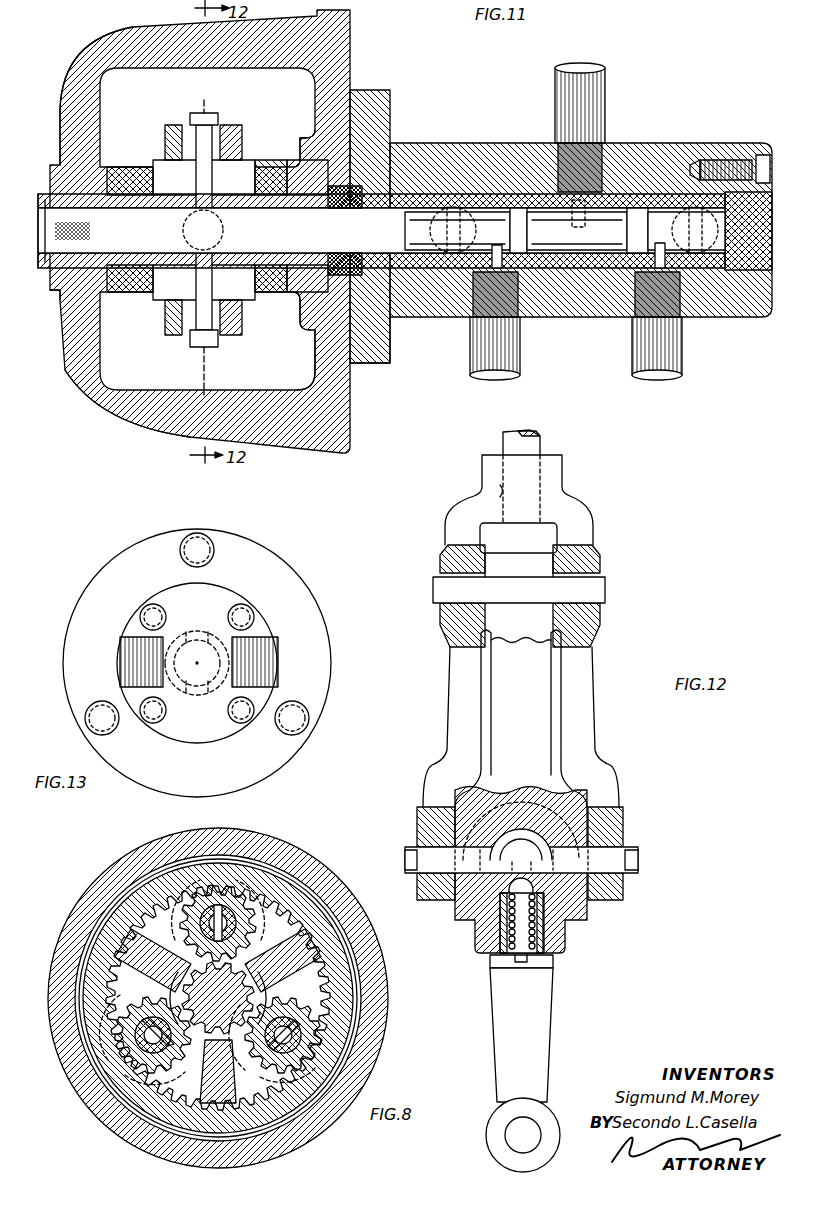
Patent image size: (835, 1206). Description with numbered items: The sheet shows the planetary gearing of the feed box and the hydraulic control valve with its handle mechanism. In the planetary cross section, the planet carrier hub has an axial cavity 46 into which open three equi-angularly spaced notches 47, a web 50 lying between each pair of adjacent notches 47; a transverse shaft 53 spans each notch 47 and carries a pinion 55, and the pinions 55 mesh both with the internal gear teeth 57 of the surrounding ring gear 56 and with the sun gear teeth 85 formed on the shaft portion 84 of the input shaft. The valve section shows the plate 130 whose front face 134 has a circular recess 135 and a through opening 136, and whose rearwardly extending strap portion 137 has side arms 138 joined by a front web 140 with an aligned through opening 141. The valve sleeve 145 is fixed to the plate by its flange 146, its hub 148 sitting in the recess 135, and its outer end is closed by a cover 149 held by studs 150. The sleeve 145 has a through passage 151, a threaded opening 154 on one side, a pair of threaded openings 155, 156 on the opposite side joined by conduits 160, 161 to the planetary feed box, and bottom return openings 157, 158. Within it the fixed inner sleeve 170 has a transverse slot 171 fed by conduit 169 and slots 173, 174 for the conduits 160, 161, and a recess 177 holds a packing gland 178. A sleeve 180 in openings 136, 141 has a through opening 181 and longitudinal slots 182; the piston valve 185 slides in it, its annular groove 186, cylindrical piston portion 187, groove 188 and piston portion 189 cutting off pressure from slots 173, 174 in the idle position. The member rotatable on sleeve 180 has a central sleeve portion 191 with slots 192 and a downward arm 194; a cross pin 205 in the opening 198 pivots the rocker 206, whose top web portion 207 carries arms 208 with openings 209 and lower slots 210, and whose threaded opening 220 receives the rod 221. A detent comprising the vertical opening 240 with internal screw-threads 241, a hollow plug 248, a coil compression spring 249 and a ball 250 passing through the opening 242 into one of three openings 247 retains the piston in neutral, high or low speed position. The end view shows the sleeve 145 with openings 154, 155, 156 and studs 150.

In FIG. 11, the side arms 138 is at (178, 42).
In FIG. 11, the front web 140 is at (75, 112).
In FIG. 11, the strap portion 137 is at (125, 432).
In FIG. 11, the through opening 141 is at (56, 295).
In FIG. 11, the front face 134 is at (352, 48).
In FIG. 11, the plate 130 is at (378, 400).
In FIG. 11, the flange 146 is at (395, 92).
In FIG. 13, the flange 146 is at (248, 553).
In FIG. 11, the valve sleeve 145 is at (480, 127).
In FIG. 11, the cover 149 is at (772, 305).
In FIG. 11, the through opening 136 is at (296, 300).
In FIG. 11, the hub 148 is at (310, 335).
In FIG. 11, the circular recess 135 is at (322, 140).
In FIG. 11, the longitudinal slots 182 is at (228, 204).
In FIG. 11, the sleeve 180 is at (128, 170).
In FIG. 11, the central sleeve portion 191 is at (268, 165).
In FIG. 12, the central sleeve portion 191 is at (580, 912).
In FIG. 11, the piston valve 185 is at (168, 205).
In FIG. 11, the longitudinal slots 192 is at (170, 170).
In FIG. 11, the arms 208 is at (235, 138).
In FIG. 12, the arms 208 is at (578, 658).
In FIG. 11, the slots 210 is at (215, 125).
In FIG. 12, the slots 210 is at (612, 842).
In FIG. 11, the annular groove 186 is at (575, 280).
In FIG. 11, the through opening 242 is at (182, 230).
In FIG. 12, the through opening 242 is at (470, 928).
In FIG. 11, the through opening 181 is at (262, 215).
In FIG. 11, the packing gland 178 is at (335, 252).
In FIG. 11, the transverse slot 173 is at (496, 250).
In FIG. 11, the cylindrical piston portion 189 is at (520, 232).
In FIG. 11, the transverse slot 171 is at (576, 198).
In FIG. 11, the transverse slot 174 is at (660, 243).
In FIG. 11, the conduit 169 is at (575, 68).
In FIG. 11, the internally screw-threaded opening 154 is at (590, 165).
In FIG. 13, the internally screw-threaded opening 154 is at (280, 645).
In FIG. 11, the cylindrical piston portion 187 is at (637, 192).
In FIG. 11, the inner sleeve 170 is at (660, 192).
In FIG. 11, the return opening 158 is at (690, 140).
In FIG. 11, the studs 150 is at (765, 155).
In FIG. 13, the studs 150 is at (245, 615).
In FIG. 11, the recess 177 is at (400, 143).
In FIG. 11, the return opening 157 is at (420, 140).
In FIG. 11, the cylindrical groove 188 is at (477, 192).
In FIG. 11, the through passage 151 is at (495, 192).
In FIG. 11, the conduit 160 is at (470, 350).
In FIG. 11, the internally screw-threaded opening 155 is at (512, 310).
In FIG. 13, the internally screw-threaded opening 155 is at (82, 568).
In FIG. 11, the conduit 161 is at (688, 370).
In FIG. 11, the internally screw-threaded opening 156 is at (675, 310).
In FIG. 13, the internally screw-threaded opening 156 is at (120, 635).
In FIG. 12, the rod 221 is at (541, 443).
In FIG. 12, the vertical threaded through opening 220 is at (500, 487).
In FIG. 12, the top web portion 207 is at (575, 487).
In FIG. 12, the transverse through opening 198 is at (515, 575).
In FIG. 12, the through openings 209 is at (450, 583).
In FIG. 12, the cross pin 205 is at (605, 588).
In FIG. 12, the rocker 206 is at (435, 690).
In FIG. 12, the internal screw-threads 241 is at (478, 940).
In FIG. 12, the ball 250 is at (555, 875).
In FIG. 12, the openings 247 is at (527, 878).
In FIG. 12, the vertical through opening 240 is at (565, 925).
In FIG. 12, the coil compression spring 249 is at (565, 943).
In FIG. 12, the hollow plug 248 is at (555, 968).
In FIG. 12, the arm 194 is at (548, 1012).
In FIG. 8, the notches 47 is at (270, 922).
In FIG. 8, the ring gear 56 is at (265, 1120).
In FIG. 8, the web 50 is at (302, 905).
In FIG. 8, the shaft portion 84 is at (228, 1055).
In FIG. 8, the sun gear teeth 85 is at (175, 970).
In FIG. 8, the pinion 55 is at (255, 1035).
In FIG. 8, the axial cavity 46 is at (258, 912).
In FIG. 8, the internal gear teeth 57 is at (190, 1063).
In FIG. 8, the transverse shaft 53 is at (282, 1002).